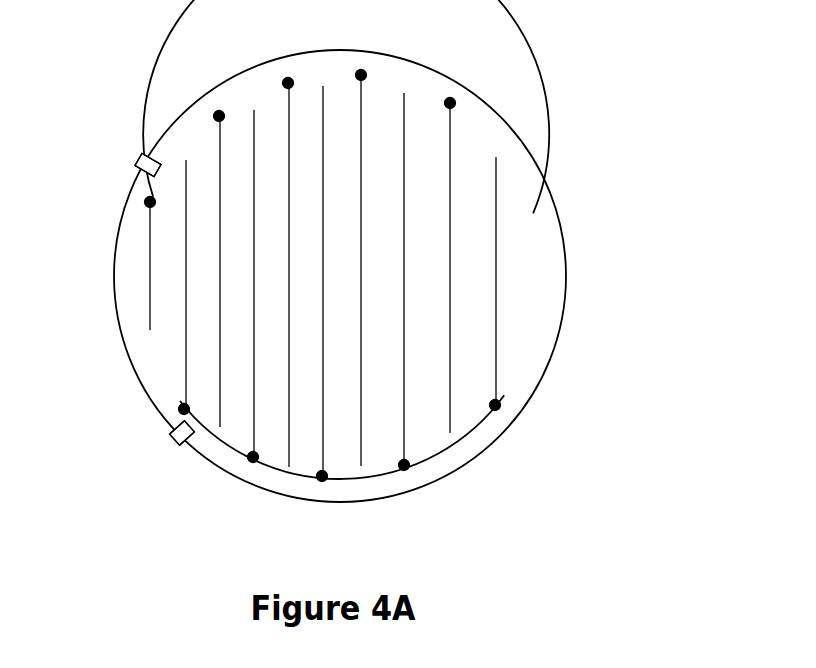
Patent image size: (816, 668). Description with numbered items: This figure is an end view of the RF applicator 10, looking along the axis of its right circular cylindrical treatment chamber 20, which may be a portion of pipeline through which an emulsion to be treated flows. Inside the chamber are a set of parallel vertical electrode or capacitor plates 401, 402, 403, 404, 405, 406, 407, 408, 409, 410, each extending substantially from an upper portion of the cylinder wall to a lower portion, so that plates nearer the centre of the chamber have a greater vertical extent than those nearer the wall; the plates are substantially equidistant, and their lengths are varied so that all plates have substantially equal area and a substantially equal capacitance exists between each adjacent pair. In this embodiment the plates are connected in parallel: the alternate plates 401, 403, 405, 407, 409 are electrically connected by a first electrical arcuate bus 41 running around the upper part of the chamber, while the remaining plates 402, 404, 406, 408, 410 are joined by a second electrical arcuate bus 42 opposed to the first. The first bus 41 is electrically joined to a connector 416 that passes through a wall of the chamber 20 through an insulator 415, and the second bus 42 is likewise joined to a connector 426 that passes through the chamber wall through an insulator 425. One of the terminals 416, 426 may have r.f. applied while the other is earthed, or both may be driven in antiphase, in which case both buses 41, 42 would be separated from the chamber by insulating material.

The RF applicator 10 is at (600, 80).
The treatment chamber 20 is at (369, 276).
The first electrical arcuate bus 41 is at (346, 106).
The second electrical arcuate bus 42 is at (356, 446).
The electrode plate 401 is at (97, 266).
The electrode plate 402 is at (135, 284).
The electrode plate 403 is at (184, 249).
The electrode plate 404 is at (212, 302).
The electrode plate 405 is at (254, 251).
The electrode plate 406 is at (358, 308).
The electrode plate 407 is at (402, 246).
The electrode plate 408 is at (435, 304).
The electrode plate 409 is at (493, 247).
The electrode plate 410 is at (533, 294).
The insulator 415 is at (114, 182).
The connector 416 is at (100, 171).
The insulator 425 is at (144, 425).
The connector 426 is at (143, 454).